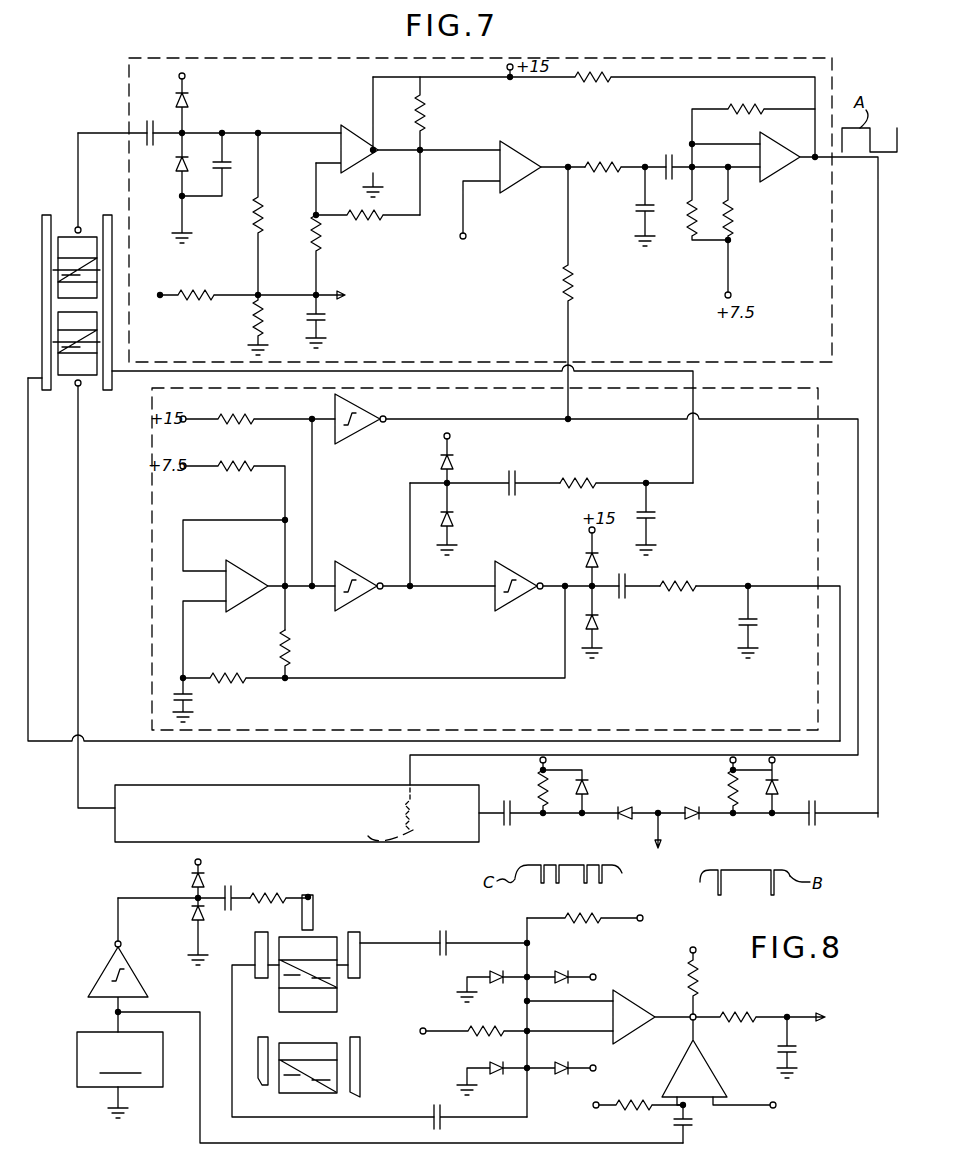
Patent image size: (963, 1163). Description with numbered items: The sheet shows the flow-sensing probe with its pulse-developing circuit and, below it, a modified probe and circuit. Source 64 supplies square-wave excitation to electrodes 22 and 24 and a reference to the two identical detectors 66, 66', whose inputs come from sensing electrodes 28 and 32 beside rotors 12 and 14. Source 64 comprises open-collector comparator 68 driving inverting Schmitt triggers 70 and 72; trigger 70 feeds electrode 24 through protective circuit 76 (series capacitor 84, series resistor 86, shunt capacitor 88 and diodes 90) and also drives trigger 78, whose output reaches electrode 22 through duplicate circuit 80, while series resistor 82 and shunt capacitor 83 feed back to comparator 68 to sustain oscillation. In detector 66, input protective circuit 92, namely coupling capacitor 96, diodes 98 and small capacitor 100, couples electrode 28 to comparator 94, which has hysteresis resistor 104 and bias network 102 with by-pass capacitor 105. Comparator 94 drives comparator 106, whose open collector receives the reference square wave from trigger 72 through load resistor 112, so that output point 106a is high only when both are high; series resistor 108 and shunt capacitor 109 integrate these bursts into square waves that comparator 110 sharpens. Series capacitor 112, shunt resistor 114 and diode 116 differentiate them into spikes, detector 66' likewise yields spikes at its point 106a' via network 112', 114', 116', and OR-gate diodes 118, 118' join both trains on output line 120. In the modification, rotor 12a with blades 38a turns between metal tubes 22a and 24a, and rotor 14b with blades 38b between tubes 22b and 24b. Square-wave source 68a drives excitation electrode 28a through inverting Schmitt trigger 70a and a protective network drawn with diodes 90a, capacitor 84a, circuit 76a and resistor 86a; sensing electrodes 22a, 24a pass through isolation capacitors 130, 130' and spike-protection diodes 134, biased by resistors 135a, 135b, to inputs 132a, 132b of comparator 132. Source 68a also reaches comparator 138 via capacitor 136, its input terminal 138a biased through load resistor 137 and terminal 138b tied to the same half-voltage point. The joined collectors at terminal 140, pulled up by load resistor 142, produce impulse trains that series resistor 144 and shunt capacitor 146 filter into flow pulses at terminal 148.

In FIG. 7, the detector 66 is at (477, 191).
In FIG. 7, the coupling capacitor 96 is at (157, 110).
In FIG. 7, the diodes 98 is at (174, 167).
In FIG. 7, the small capacitor 100 is at (236, 165).
In FIG. 7, the input protective circuit 92 is at (245, 122).
In FIG. 7, the comparator 94 is at (332, 126).
In FIG. 7, the resistor 104 is at (352, 220).
In FIG. 7, the by-pass capacitor 105 is at (326, 318).
In FIG. 7, the bias network 102 is at (228, 316).
In FIG. 7, the sensing electrode 28 is at (76, 227).
In FIG. 7, the rotor 12 is at (80, 237).
In FIG. 7, the rotor 14 is at (85, 340).
In FIG. 7, the electrode 22 is at (50, 392).
In FIG. 7, the sensing electrode 32 is at (82, 386).
In FIG. 7, the electrode 24 is at (110, 392).
In FIG. 7, the comparator 106 is at (514, 140).
In FIG. 7, the output point 106a is at (568, 134).
In FIG. 7, the series resistor 108 is at (627, 142).
In FIG. 7, the shunt capacitor 109 is at (638, 210).
In FIG. 7, the comparator 110 is at (776, 180).
In FIG. 7, the load resistor 112 is at (690, 508).
In FIG. 7, the source 64 is at (152, 575).
In FIG. 7, the inverting Schmitt trigger 72 is at (352, 442).
In FIG. 7, the series capacitor 84 is at (512, 472).
In FIG. 7, the protective circuit 76 is at (561, 467).
In FIG. 7, the series resistor 86 is at (584, 479).
In FIG. 7, the shunt capacitor 88 is at (660, 514).
In FIG. 7, the diodes 90 is at (458, 456).
In FIG. 7, the circuit 80 is at (678, 577).
In FIG. 7, the comparator 68 is at (256, 570).
In FIG. 7, the inverting Schmitt trigger 70 is at (368, 554).
In FIG. 7, the inverting Schmitt trigger 78 is at (492, 608).
In FIG. 7, the series resistor 82 is at (246, 650).
In FIG. 7, the shunt capacitor 83 is at (196, 698).
In FIG. 7, the detector 66' is at (266, 816).
In FIG. 7, the comparator output 106a' is at (370, 829).
In FIG. 7, the series capacitor 112' is at (511, 818).
In FIG. 7, the shunt resistor 114' is at (519, 783).
In FIG. 7, the diode 116' is at (584, 787).
In FIG. 7, the OR gate diode 118' is at (631, 828).
In FIG. 7, the shunt resistor 114 is at (704, 783).
In FIG. 7, the diode 116 is at (777, 786).
In FIG. 7, the OR gate diode 118 is at (737, 828).
In FIG. 7, the combined output line 120 is at (680, 832).
In FIG. 8, the inverting Schmitt trigger 70a is at (110, 956).
In FIG. 8, the clamping diodes 90a is at (192, 911).
In FIG. 8, the capacitor 84a is at (226, 885).
In FIG. 8, the timing network 76a is at (270, 888).
In FIG. 8, the resistor 86a is at (290, 894).
In FIG. 8, the electrode 28a is at (302, 916).
In FIG. 8, the vane or blade 38a is at (313, 946).
In FIG. 8, the rotor 12a is at (342, 940).
In FIG. 8, the metal tube 22a is at (256, 950).
In FIG. 8, the metal tube 22b is at (262, 1039).
In FIG. 8, the transducer element 38b is at (294, 1055).
In FIG. 8, the rotor 14b is at (329, 1046).
In FIG. 8, the metal tube 24a is at (360, 957).
In FIG. 8, the metal tube 24b is at (360, 1068).
In FIG. 8, the d-c isolation capacitor 130 is at (483, 929).
In FIG. 8, the d-c isolation capacitor 130' is at (458, 1107).
In FIG. 8, the spike-protection diodes 134 is at (546, 968).
In FIG. 8, the resistor 135a is at (589, 928).
In FIG. 8, the resistor 135b is at (480, 1038).
In FIG. 8, the input electrode 132a is at (538, 1005).
In FIG. 8, the input electrode 132b is at (599, 1033).
In FIG. 8, the open-collector comparator 132 is at (658, 1025).
In FIG. 8, the load resistor 142 is at (702, 976).
In FIG. 8, the terminal 140 is at (694, 1020).
In FIG. 8, the series resistor 144 is at (742, 1011).
In FIG. 8, the terminal 148 is at (790, 1011).
In FIG. 8, the shunt capacitor 146 is at (798, 1050).
In FIG. 8, the comparator 138 is at (706, 1056).
In FIG. 8, the input terminal 138a is at (674, 1102).
In FIG. 8, the input terminal 138b is at (718, 1103).
In FIG. 8, the capacitor 136 is at (692, 1127).
In FIG. 8, the load resistor 137 is at (638, 1114).
In FIG. 8, the square-wave source 68a is at (120, 1075).